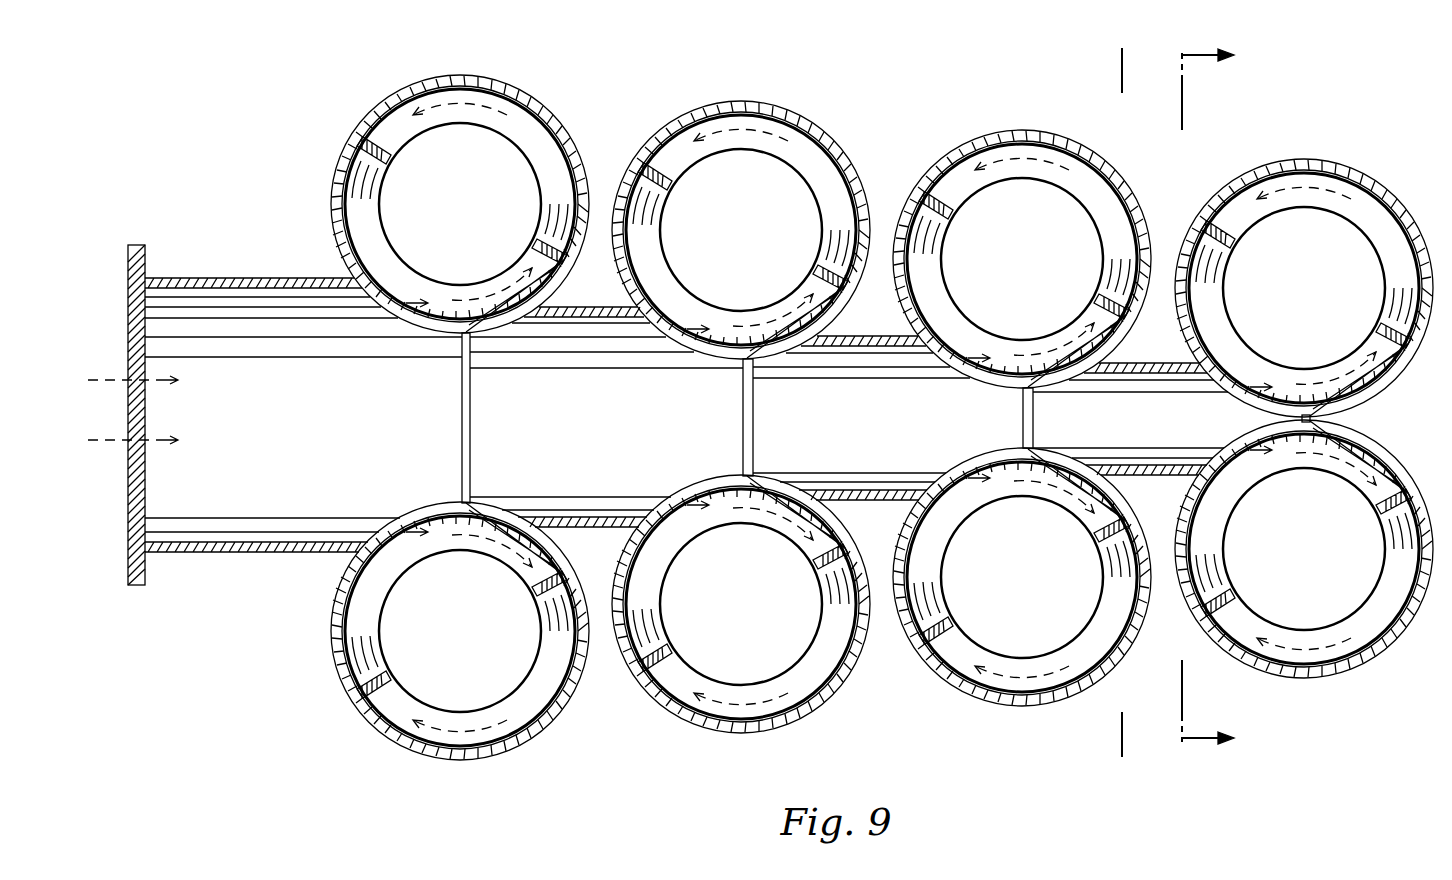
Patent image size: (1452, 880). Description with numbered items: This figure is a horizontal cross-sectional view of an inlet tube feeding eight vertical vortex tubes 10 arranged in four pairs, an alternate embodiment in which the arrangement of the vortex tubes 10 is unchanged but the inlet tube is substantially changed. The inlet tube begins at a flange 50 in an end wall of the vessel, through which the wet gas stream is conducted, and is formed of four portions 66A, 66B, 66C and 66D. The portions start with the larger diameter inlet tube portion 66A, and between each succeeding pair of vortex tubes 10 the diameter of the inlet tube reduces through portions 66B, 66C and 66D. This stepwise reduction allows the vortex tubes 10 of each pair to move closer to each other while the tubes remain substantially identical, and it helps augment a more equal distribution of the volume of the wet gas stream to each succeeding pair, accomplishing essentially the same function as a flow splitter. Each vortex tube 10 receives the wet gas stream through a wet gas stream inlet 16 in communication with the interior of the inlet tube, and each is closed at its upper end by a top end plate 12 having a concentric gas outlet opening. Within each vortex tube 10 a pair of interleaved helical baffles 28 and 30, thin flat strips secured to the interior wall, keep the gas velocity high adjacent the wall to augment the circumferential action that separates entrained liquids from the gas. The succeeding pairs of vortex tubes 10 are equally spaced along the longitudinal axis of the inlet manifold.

The vortex tube 10 is at (1262, 670).
The top end plate 12 is at (1178, 402).
The wet gas stream inlet 16 is at (965, 466).
The helical baffle 28 is at (1355, 640).
The helical baffle 30 is at (1212, 515).
The flange 50 is at (140, 246).
The inlet tube portion 66A is at (236, 278).
The inlet tube portion 66B is at (598, 305).
The inlet tube portion 66C is at (875, 334).
The inlet tube portion 66D is at (1162, 362).